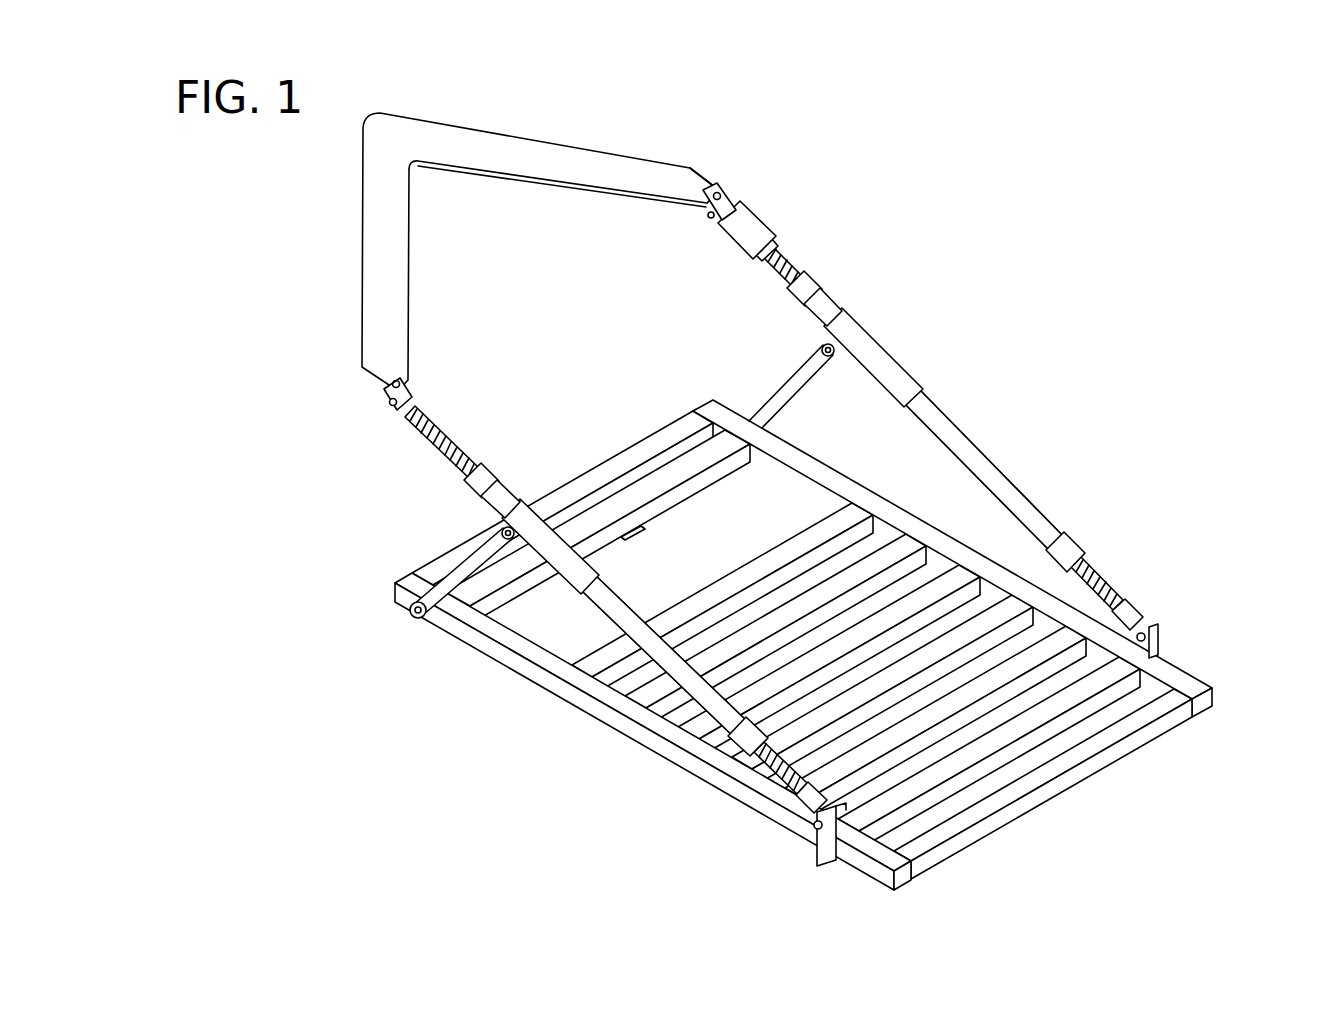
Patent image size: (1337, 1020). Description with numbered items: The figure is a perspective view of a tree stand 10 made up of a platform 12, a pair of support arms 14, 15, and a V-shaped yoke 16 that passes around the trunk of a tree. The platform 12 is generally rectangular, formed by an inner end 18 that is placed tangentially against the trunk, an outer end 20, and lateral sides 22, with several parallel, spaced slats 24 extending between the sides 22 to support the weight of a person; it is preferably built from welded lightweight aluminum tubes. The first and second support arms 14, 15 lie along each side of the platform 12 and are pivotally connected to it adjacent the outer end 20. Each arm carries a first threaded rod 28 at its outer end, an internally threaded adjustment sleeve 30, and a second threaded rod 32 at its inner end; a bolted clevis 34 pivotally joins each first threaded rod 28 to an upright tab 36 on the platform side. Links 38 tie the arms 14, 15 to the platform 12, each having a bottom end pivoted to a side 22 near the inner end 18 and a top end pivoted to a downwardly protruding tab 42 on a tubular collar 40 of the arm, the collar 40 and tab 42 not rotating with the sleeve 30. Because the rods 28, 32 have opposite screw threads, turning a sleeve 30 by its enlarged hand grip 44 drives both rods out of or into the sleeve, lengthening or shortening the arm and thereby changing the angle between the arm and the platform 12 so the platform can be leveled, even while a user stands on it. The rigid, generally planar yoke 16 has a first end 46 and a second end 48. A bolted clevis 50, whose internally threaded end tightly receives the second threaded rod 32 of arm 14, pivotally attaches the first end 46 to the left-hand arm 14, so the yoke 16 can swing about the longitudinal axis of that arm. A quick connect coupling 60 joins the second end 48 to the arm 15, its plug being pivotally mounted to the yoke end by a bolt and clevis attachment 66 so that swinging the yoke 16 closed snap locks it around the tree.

The tree stand 10 is at (1082, 186).
The platform 12 is at (592, 723).
The first support arm 14 is at (583, 608).
The second support arm 15 is at (963, 427).
The V-shaped yoke 16 is at (492, 132).
The inner end 18 is at (637, 442).
The outer end 20 is at (1068, 793).
The lateral sides 22 is at (915, 505).
The slats 24 is at (838, 645).
The first threaded rod 28 is at (772, 778).
The adjustment sleeve 30 is at (600, 614).
The second threaded rod 32 is at (437, 443).
The bolted clevis 34 is at (816, 828).
The upright tab 36 is at (846, 856).
The link 38 is at (445, 562).
The tubular collar 40 is at (523, 503).
The tab 42 is at (505, 529).
The hand grip 44 is at (545, 551).
The first end 46 is at (362, 363).
The second end 48 is at (674, 162).
The bolted clevis 50 is at (392, 401).
The quick connect coupling 60 is at (760, 210).
The bolt and clevis attachment 66 is at (716, 190).